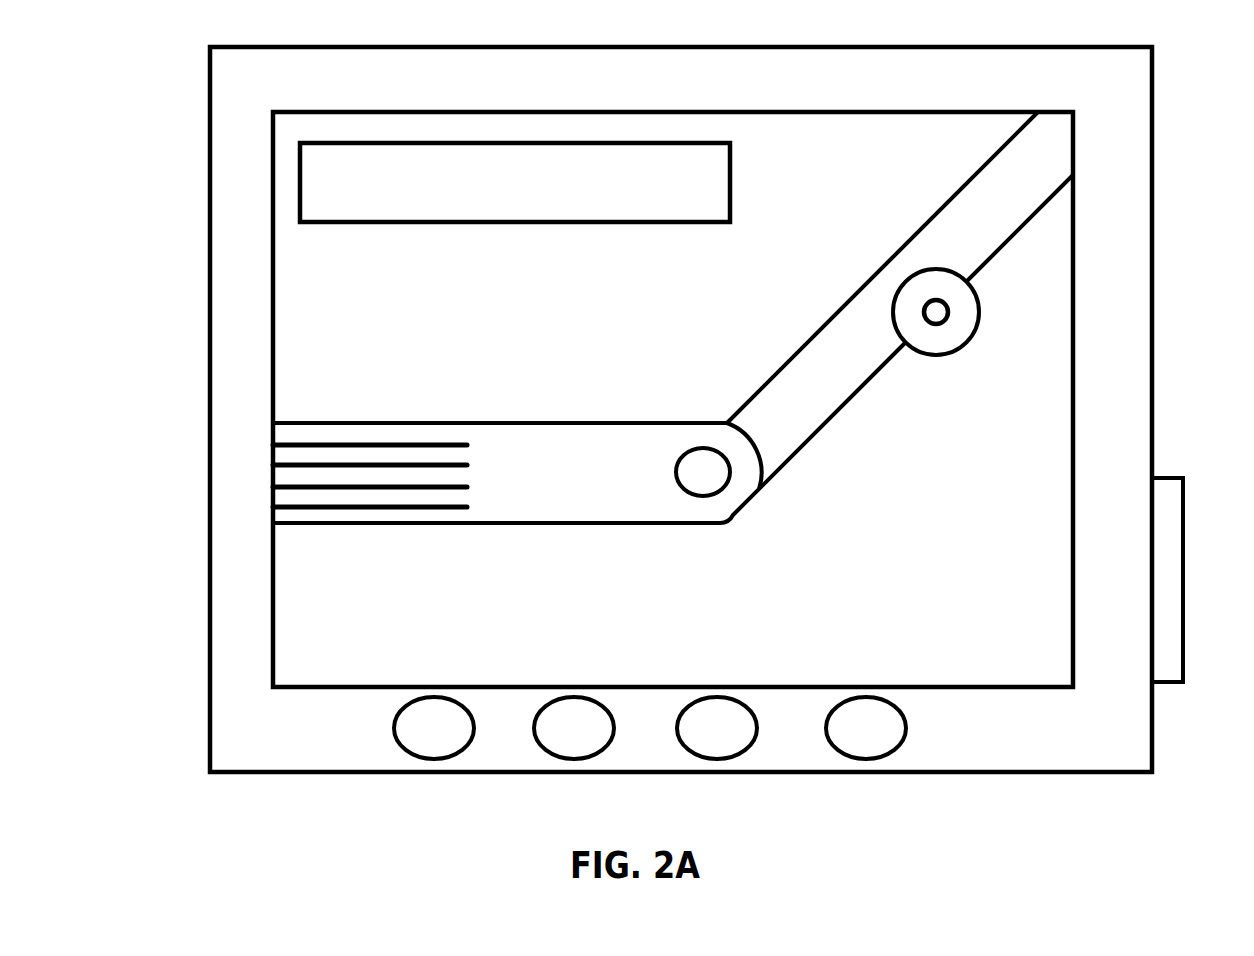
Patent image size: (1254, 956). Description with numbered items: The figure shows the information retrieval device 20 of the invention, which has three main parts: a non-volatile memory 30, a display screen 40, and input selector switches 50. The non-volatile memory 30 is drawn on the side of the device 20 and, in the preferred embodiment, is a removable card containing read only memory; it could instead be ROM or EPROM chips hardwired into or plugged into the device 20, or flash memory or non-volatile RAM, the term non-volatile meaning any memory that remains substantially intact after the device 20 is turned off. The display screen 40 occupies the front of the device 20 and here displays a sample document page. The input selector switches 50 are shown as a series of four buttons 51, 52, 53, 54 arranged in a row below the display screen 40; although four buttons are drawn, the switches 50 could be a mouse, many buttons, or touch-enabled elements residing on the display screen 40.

The information retrieval device 20 is at (954, 773).
The non-volatile memory 30 is at (1183, 565).
The display screen 40 is at (634, 110).
The input selector switches 50 is at (694, 728).
The button 51 is at (455, 745).
The button 52 is at (595, 745).
The button 53 is at (738, 745).
The button 54 is at (887, 745).